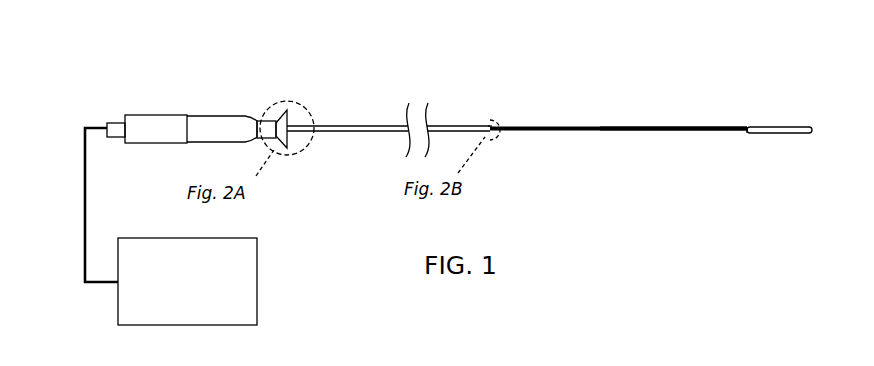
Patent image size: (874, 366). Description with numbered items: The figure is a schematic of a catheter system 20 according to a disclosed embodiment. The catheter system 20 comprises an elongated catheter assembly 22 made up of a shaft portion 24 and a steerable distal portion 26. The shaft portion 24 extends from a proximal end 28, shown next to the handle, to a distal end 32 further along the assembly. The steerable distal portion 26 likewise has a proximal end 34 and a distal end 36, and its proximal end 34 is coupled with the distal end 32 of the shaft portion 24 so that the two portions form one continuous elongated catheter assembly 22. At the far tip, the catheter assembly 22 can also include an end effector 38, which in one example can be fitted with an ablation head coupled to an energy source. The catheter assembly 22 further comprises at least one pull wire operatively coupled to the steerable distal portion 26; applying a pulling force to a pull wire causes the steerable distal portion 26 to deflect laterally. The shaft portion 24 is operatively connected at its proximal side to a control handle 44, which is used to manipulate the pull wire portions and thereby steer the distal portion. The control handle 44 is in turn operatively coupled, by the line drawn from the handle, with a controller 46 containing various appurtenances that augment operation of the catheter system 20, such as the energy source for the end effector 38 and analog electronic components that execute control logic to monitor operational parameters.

The catheter system 20 is at (68, 69).
The elongated catheter assembly 22 is at (594, 118).
The shaft portion 24 is at (378, 132).
The steerable distal portion 26 is at (636, 127).
The proximal end 28 is at (289, 122).
The distal end 32 is at (495, 128).
The proximal end 34 is at (497, 132).
The distal end 36 is at (747, 127).
The end effector 38 is at (766, 133).
The control handle 44 is at (176, 108).
The controller 46 is at (195, 291).